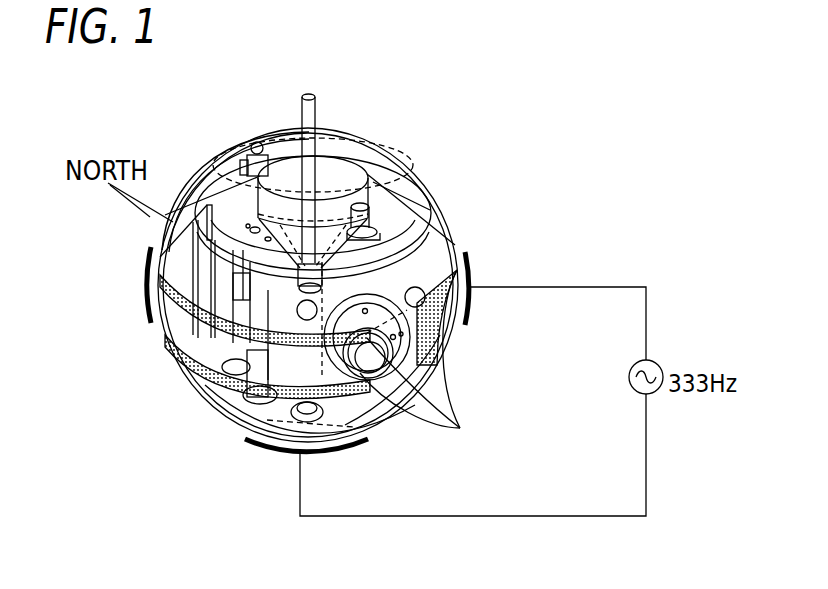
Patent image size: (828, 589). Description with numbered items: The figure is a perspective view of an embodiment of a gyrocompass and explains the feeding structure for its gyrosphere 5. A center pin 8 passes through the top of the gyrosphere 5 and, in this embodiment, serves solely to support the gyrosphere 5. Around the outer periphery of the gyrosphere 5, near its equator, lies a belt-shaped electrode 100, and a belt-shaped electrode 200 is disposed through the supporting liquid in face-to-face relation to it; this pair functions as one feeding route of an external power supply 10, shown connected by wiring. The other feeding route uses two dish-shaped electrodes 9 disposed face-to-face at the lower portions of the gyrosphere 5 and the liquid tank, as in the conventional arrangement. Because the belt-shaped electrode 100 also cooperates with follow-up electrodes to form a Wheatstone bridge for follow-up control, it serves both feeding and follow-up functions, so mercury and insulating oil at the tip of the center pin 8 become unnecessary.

The gyrosphere 5 is at (428, 207).
The center pin 8 is at (316, 113).
The dish-shaped electrodes 9 is at (268, 455).
The external power supply 10 is at (653, 363).
The belt-shaped electrode on the gyrosphere side 100 is at (414, 358).
The belt-shaped electrode on the liquid tank side 200 is at (143, 262).